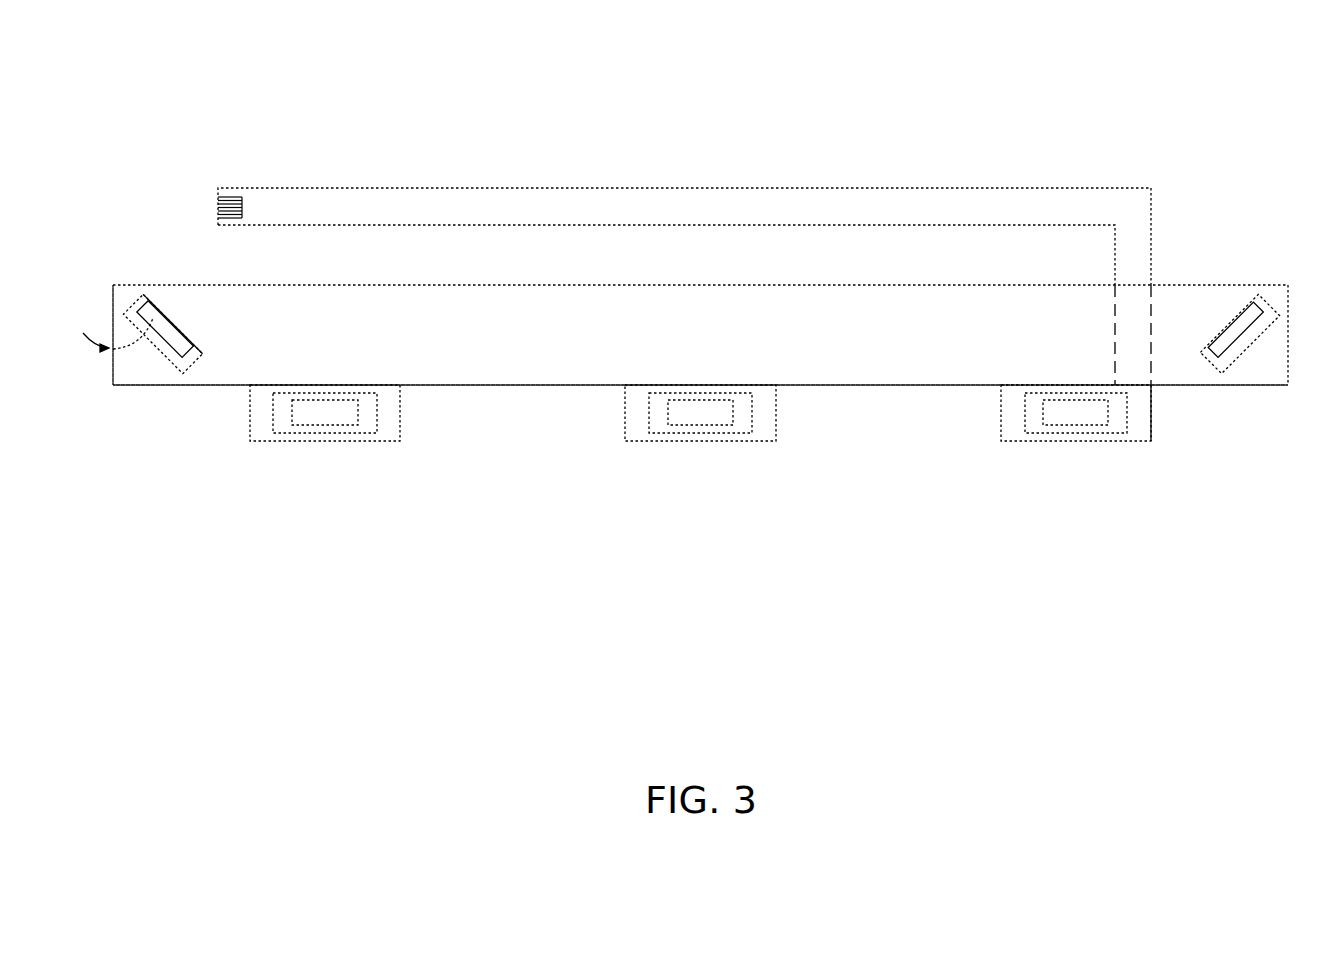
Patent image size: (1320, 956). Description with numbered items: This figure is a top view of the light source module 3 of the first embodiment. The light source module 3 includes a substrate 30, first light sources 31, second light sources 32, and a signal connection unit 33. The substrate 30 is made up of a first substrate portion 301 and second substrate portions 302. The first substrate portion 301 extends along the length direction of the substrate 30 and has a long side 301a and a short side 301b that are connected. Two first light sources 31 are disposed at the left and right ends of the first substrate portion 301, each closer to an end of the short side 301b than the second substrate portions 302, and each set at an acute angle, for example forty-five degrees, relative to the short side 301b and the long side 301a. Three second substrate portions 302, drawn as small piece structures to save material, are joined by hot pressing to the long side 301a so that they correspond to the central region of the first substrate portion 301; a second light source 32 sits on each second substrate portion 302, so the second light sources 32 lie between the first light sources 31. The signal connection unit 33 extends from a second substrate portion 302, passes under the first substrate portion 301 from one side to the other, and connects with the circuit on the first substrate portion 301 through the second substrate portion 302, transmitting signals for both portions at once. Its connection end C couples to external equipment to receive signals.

The light source module 3 is at (169, 77).
The substrate 30 is at (667, 364).
The first substrate portion 301 is at (140, 372).
The long side 301a is at (488, 385).
The short side 301b is at (113, 310).
The second substrate portion 302 is at (260, 408).
The first light source 31 is at (150, 325).
The second light source 32 is at (323, 410).
The signal connection unit 33 is at (1140, 248).
The connection end C is at (217, 207).